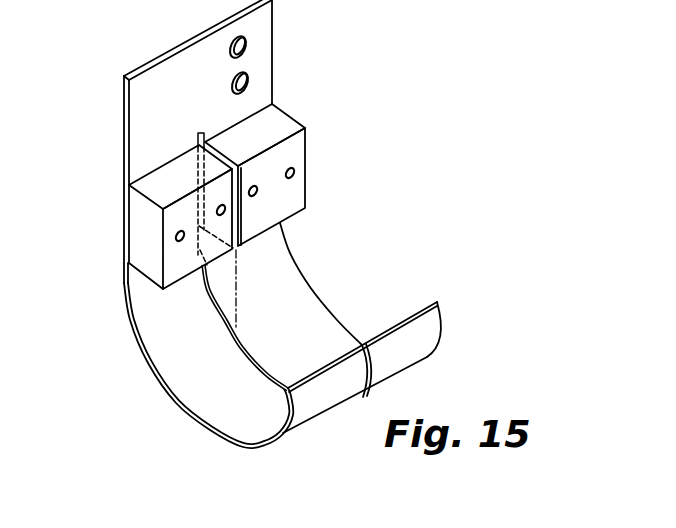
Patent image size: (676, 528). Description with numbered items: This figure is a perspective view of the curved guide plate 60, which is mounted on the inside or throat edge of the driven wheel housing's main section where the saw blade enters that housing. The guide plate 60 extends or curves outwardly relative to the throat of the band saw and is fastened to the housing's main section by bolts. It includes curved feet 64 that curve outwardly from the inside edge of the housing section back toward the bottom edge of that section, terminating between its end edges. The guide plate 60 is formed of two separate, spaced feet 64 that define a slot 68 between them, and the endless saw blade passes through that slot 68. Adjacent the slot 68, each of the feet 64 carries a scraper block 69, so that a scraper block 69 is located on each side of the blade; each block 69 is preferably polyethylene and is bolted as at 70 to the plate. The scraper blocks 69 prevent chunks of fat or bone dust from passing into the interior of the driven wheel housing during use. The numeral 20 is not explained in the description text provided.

The curved guide plate 60 is at (113, 347).
The curved feet 64 is at (299, 382).
The slot 68 is at (227, 320).
The scraper block 69 is at (300, 142).
The bolt 70 is at (223, 207).
The center line / axis 20 is at (238, 290).